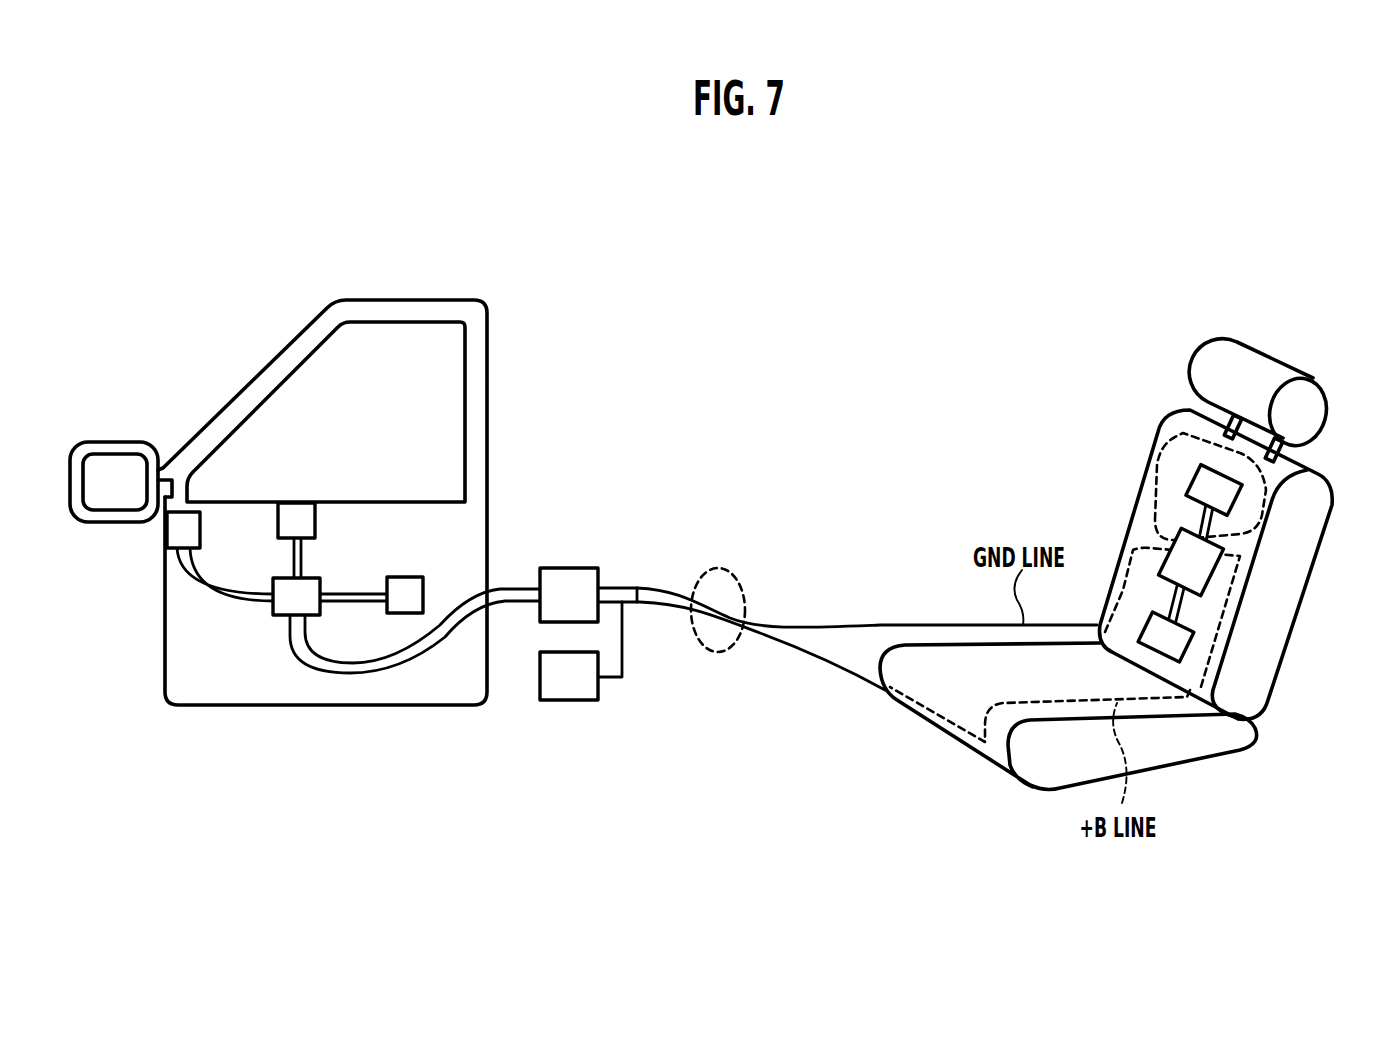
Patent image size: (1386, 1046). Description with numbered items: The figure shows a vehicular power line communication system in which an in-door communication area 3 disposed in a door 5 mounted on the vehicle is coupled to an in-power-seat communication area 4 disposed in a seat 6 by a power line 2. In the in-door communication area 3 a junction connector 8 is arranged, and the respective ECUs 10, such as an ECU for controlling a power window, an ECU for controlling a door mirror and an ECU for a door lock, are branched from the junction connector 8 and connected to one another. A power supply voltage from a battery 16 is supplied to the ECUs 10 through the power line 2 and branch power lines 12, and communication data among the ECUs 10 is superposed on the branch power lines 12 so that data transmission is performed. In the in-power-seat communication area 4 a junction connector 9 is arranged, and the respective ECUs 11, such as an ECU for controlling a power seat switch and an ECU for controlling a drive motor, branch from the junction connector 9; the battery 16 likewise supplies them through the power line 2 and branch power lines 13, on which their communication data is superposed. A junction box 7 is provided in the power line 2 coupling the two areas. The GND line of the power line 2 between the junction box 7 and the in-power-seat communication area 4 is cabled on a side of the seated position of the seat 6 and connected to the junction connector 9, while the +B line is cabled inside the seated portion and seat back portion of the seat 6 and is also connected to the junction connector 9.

The power line 2 is at (722, 568).
The in-door communication area 3 is at (313, 712).
The in-power-seat communication area 4 is at (1130, 453).
The door 5 is at (468, 533).
The seat 6 is at (1280, 608).
The junction box 7 is at (567, 568).
The junction connector 8 is at (290, 603).
The junction connector 9 is at (1200, 570).
The ECUs 10 is at (173, 528).
The ECUs 11 is at (1203, 480).
The branch power lines 12 is at (217, 593).
The branch power lines 13 is at (1237, 528).
The battery 16 is at (568, 700).